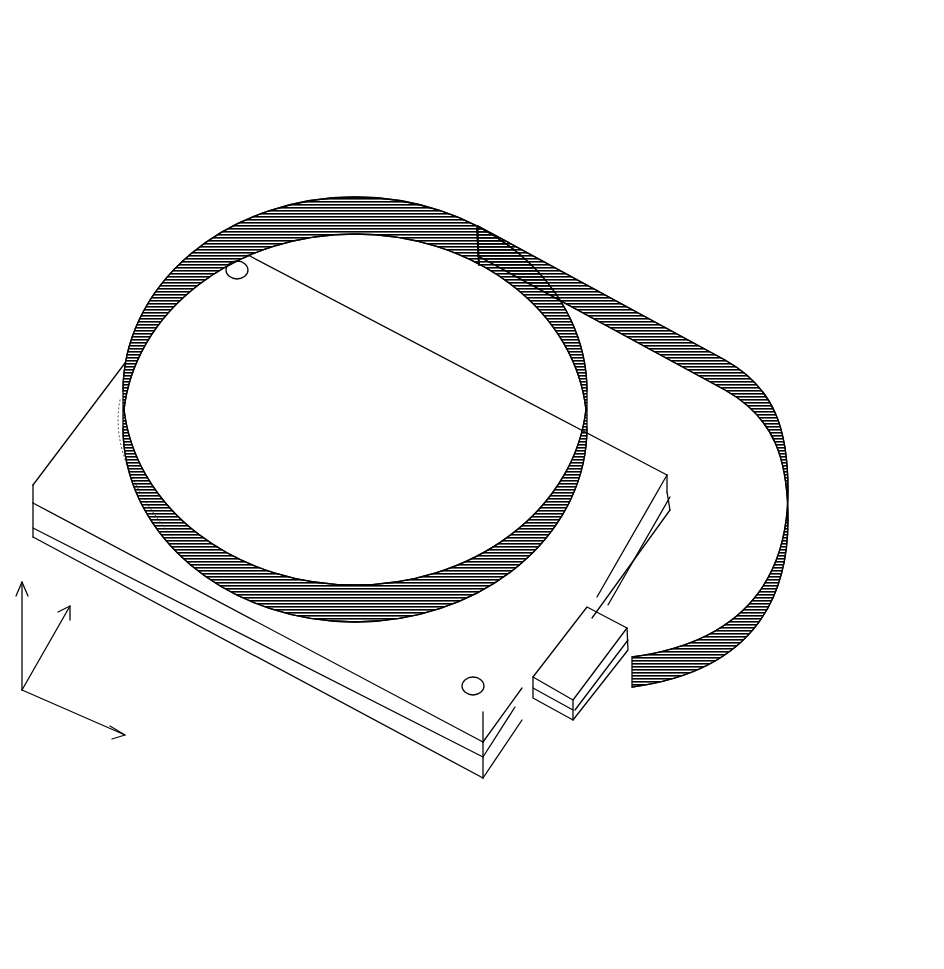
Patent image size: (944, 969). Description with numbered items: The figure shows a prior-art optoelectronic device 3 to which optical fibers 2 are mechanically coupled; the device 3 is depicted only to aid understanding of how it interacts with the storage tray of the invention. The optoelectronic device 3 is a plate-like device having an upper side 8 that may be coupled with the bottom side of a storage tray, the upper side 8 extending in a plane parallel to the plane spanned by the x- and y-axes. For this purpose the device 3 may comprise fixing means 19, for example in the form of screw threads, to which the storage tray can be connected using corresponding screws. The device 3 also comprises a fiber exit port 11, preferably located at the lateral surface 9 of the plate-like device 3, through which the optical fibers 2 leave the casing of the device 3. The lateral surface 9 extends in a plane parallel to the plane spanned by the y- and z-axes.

The optical fibers 2 is at (480, 226).
The optoelectronic device 3 is at (127, 140).
The upper side 8 is at (97, 487).
The lateral surface 9 is at (510, 740).
The fiber exit port 11 is at (603, 685).
The fixing means 19 is at (242, 274).